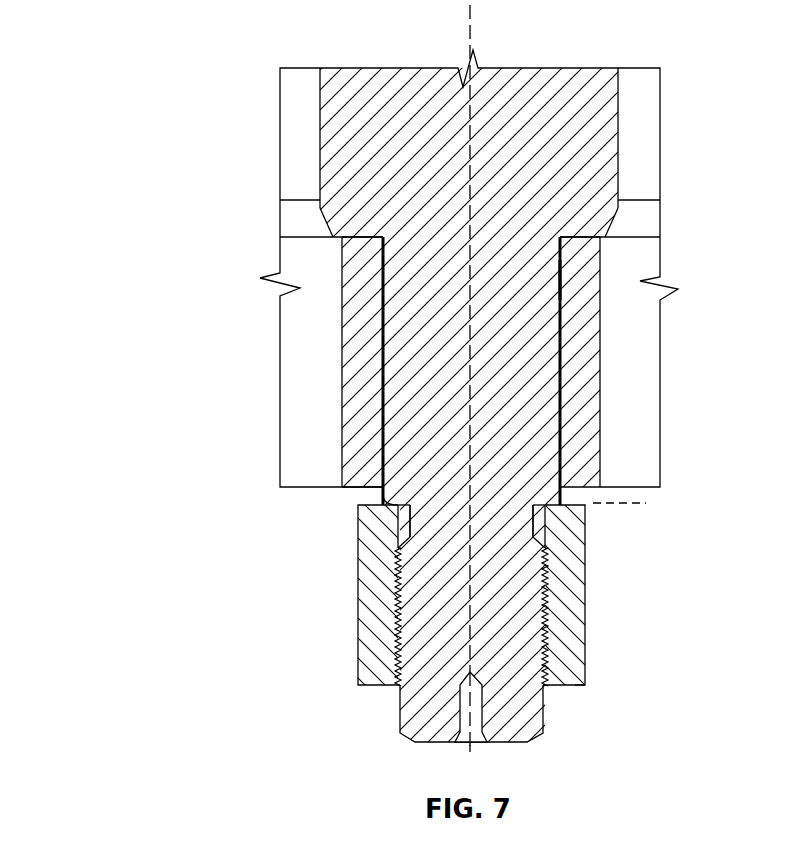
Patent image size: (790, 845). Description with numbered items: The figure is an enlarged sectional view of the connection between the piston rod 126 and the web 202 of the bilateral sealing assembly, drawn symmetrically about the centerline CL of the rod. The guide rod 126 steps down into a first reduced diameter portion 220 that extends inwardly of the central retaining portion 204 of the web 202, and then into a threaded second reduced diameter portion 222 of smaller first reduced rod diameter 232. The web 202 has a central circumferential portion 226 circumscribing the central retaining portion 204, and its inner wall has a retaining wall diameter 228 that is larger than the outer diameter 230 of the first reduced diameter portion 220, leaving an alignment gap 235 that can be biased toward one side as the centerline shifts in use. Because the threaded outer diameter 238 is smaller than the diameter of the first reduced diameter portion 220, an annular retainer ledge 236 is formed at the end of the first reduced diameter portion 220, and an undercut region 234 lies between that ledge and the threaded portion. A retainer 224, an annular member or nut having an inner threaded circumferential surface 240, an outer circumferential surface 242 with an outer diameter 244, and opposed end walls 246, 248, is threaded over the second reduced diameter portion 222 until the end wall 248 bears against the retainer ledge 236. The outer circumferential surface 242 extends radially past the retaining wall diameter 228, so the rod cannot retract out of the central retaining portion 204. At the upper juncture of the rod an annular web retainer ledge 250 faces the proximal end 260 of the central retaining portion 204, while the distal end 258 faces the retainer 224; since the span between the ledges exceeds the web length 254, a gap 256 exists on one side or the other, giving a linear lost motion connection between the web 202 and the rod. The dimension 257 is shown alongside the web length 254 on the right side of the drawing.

The guide rod 126 is at (388, 83).
The web 202 is at (323, 345).
The central retaining portion 204 is at (357, 303).
The first reduced diameter portion 220 is at (546, 255).
The second reduced diameter portion 222 is at (413, 713).
The retainer 224 is at (373, 647).
The central circumferential portion 226 is at (345, 277).
The retaining wall diameter 228 is at (559, 305).
The outer diameter of the first reduced diameter portion 230 is at (384, 390).
The first reduced rod diameter 232 is at (380, 368).
The undercut region 234 is at (400, 250).
The alignment gap 235 is at (562, 282).
The annular retainer ledge 236 is at (548, 510).
The outer diameter of the threaded portion 238 is at (544, 553).
The inner threaded circumferential surface 240 is at (540, 683).
The outer circumferential surface 242 is at (587, 637).
The outer diameter of the retainer 244 is at (584, 588).
The end wall 246 is at (580, 685).
The end wall 248 is at (380, 500).
The annular web retainer ledge 250 is at (590, 240).
The web length 254 is at (622, 241).
The gap 256 is at (583, 505).
The total height 257 is at (640, 241).
The distal end 258 is at (348, 487).
The proximal end 260 is at (353, 237).
The centerline CL is at (447, 698).